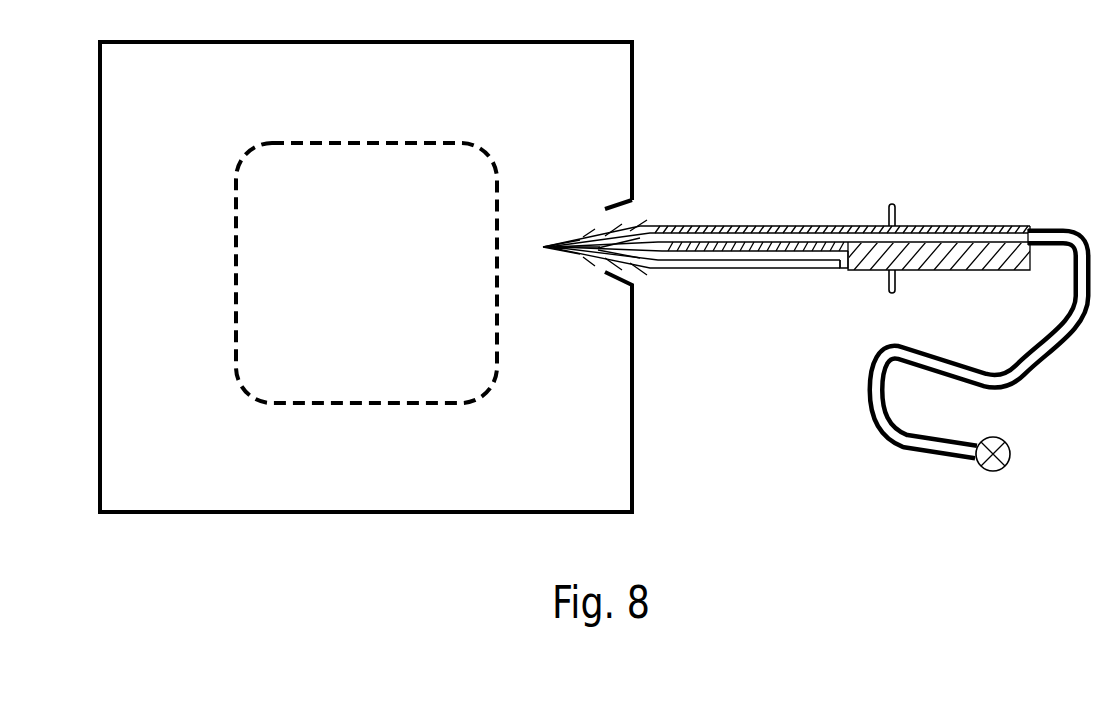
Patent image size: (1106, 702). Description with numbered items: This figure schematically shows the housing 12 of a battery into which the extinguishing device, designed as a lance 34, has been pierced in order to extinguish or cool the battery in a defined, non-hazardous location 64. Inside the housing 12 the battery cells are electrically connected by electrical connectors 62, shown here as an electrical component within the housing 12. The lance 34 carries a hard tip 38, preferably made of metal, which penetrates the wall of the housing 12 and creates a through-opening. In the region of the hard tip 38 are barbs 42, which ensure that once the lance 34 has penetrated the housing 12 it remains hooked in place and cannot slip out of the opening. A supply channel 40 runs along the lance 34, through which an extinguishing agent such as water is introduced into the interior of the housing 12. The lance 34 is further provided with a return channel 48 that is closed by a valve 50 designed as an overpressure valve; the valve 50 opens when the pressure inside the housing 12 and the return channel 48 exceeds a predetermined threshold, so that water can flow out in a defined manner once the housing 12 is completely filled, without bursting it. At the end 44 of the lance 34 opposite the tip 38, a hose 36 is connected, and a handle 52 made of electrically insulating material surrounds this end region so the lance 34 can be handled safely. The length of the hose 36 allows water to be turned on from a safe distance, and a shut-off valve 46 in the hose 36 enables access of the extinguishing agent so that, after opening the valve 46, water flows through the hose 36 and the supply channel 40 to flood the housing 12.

The housing 12 is at (632, 425).
The location 64 is at (364, 471).
The electrical connectors 62 is at (366, 273).
The hard tip 38 is at (562, 253).
The lance 34 is at (833, 224).
The supply channel 40 is at (721, 240).
The return channel 48 is at (721, 268).
The valve 50 is at (840, 274).
The handle 52 is at (930, 222).
The barbs 42 is at (608, 222).
The hose 36 is at (962, 355).
The end 44 is at (1025, 222).
The valve 46 is at (1005, 445).